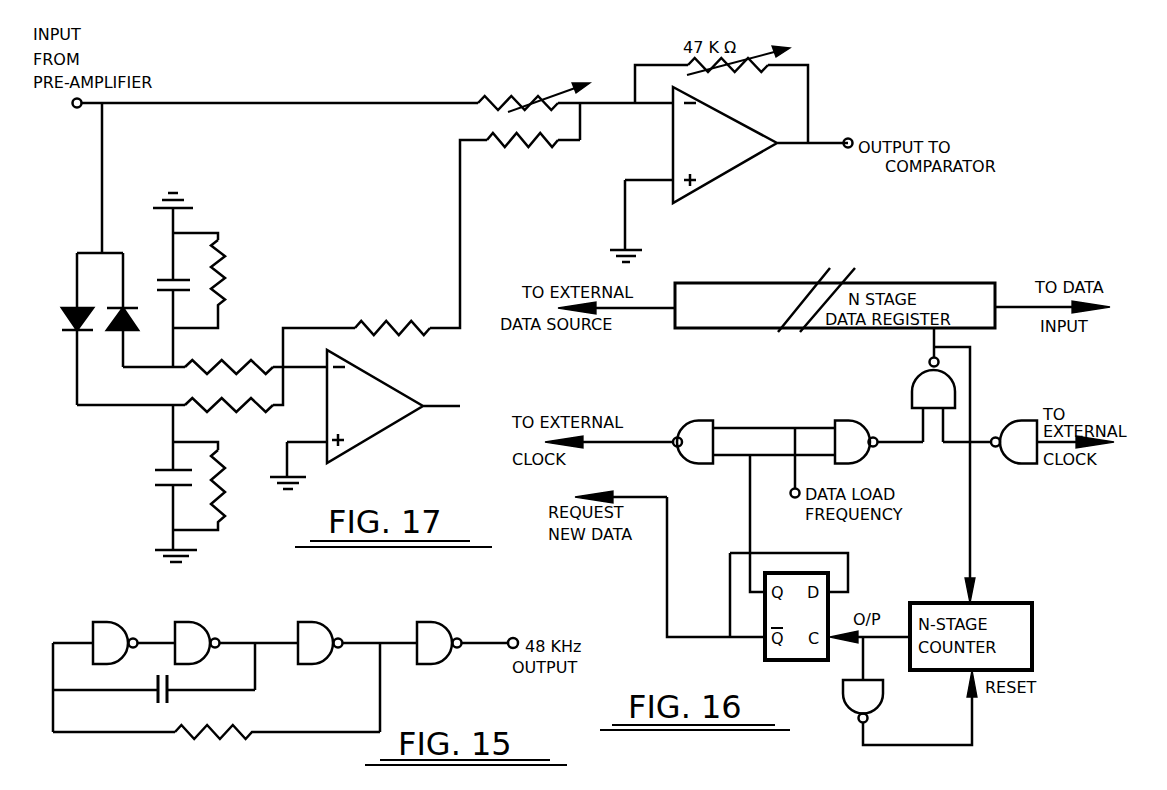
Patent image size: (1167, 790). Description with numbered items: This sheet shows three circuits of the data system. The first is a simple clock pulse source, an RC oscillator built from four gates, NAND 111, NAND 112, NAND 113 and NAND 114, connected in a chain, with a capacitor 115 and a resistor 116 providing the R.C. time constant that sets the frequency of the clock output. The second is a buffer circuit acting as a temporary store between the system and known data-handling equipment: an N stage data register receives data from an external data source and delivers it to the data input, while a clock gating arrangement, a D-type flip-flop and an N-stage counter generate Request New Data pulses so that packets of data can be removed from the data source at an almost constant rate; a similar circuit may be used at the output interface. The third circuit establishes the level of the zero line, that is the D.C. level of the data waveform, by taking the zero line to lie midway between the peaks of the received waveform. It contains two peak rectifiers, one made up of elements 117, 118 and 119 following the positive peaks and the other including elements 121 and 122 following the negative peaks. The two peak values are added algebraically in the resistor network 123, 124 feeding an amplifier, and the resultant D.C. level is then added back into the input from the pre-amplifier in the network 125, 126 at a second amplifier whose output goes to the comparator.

In FIG. 15, the NAND 111 is at (108, 622).
In FIG. 15, the NAND 112 is at (190, 622).
In FIG. 15, the NAND 113 is at (308, 622).
In FIG. 15, the NAND 114 is at (425, 622).
In FIG. 15, the capacitor 115 is at (168, 694).
In FIG. 15, the resistor 116 is at (217, 732).
In FIG. 17, the peak rectifier element 117 is at (62, 332).
In FIG. 17, the peak rectifier element 118 is at (155, 483).
In FIG. 17, the peak rectifier element 119 is at (227, 493).
In FIG. 17, the peak rectifier element 121 is at (163, 279).
In FIG. 17, the peak rectifier element 122 is at (248, 257).
In FIG. 17, the resistor network 123 is at (230, 372).
In FIG. 17, the resistor network 124 is at (215, 400).
In FIG. 17, the network 125 is at (500, 141).
In FIG. 17, the network 126 is at (513, 102).